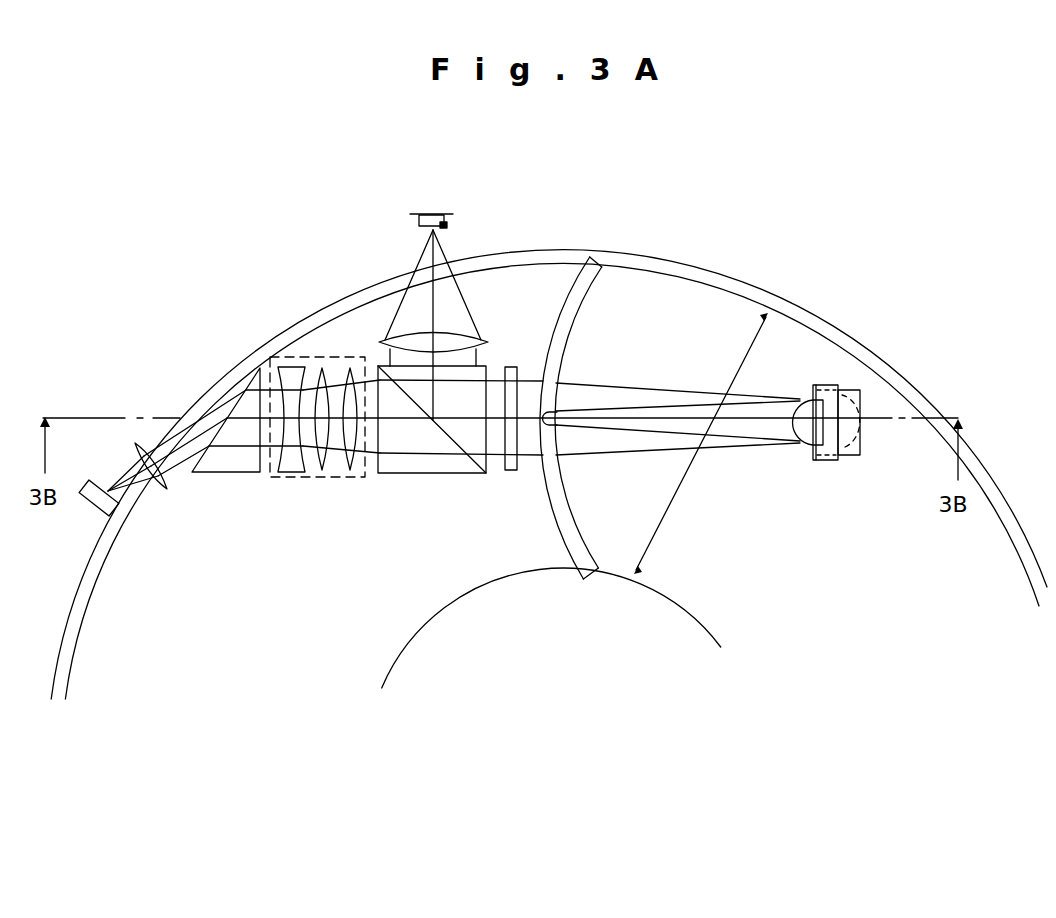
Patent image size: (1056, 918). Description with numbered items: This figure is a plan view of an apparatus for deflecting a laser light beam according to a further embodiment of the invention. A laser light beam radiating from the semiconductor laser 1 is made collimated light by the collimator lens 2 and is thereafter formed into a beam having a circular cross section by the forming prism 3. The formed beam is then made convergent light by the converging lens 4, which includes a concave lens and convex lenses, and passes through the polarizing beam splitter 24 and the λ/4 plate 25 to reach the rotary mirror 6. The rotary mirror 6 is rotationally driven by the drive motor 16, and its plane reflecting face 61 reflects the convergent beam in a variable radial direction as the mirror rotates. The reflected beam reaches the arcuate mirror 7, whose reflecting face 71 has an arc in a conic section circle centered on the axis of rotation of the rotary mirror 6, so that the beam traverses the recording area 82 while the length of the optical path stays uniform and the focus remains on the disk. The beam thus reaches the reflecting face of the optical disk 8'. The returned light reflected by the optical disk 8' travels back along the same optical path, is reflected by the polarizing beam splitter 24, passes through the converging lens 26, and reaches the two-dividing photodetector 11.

The semiconductor laser 1 is at (92, 526).
The collimator lens 2 is at (160, 488).
The forming prism 3 is at (243, 468).
The converging lens 4 is at (337, 476).
The polarizing beam splitter 24 is at (412, 470).
The λ/4 plate 25 is at (509, 367).
The converging lens 26 is at (450, 337).
The two-dividing photodetector 11 is at (447, 216).
The arcuate mirror 7 is at (568, 355).
The reflecting face of the arcuate mirror 71 is at (568, 320).
The optical disk 8' is at (549, 454).
The recording area 82 is at (714, 462).
The rotary mirror 6 is at (836, 381).
The plane reflecting face 61 is at (813, 383).
The drive motor 16 is at (813, 449).